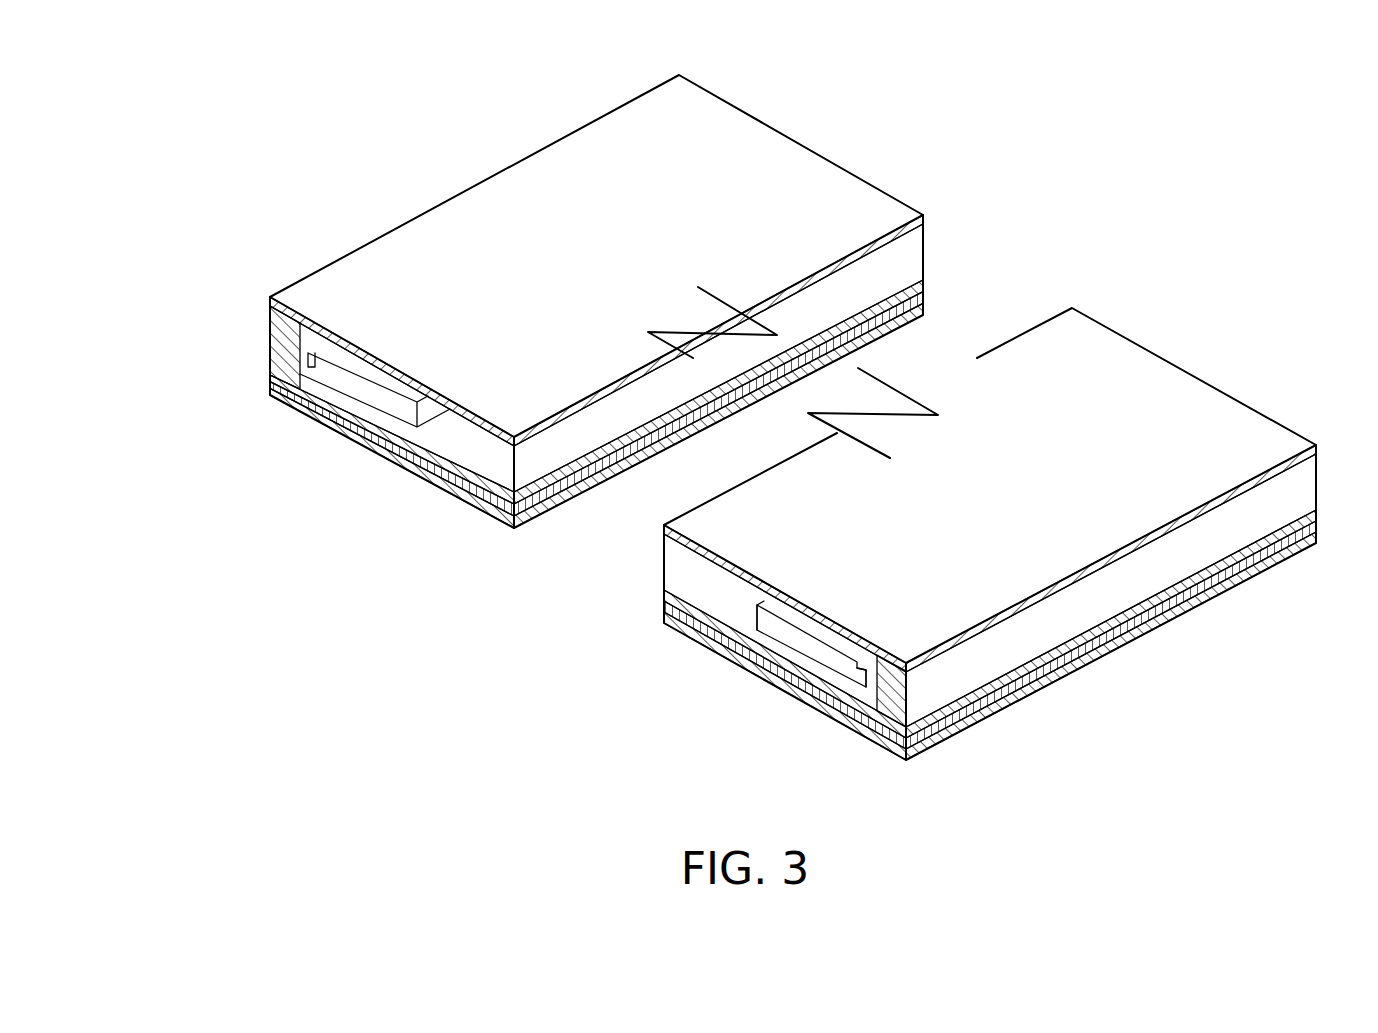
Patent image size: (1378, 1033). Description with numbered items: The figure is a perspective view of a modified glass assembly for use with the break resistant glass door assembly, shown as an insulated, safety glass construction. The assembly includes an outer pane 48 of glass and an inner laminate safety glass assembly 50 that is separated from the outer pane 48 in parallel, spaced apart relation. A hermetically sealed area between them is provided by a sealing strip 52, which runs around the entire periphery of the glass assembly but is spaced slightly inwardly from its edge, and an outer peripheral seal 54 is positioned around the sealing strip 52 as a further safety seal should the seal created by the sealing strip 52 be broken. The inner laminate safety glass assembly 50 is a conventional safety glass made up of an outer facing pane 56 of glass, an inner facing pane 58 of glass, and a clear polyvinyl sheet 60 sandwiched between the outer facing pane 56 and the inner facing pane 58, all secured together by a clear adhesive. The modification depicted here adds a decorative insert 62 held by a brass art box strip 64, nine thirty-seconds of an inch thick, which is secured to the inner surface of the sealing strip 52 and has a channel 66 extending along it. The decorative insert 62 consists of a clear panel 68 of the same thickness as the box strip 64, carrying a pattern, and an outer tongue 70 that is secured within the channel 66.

The outer pane 48 is at (615, 132).
The inner laminate safety glass assembly 50 is at (441, 154).
The sealing strip 52 is at (297, 322).
The outer peripheral seal 54 is at (268, 341).
The outer facing pane 56 is at (493, 467).
The inner facing pane 58 is at (347, 437).
The clear polyvinyl sheet 60 is at (398, 460).
The decorative insert 62 is at (757, 615).
The brass art box strip 64 is at (870, 720).
The channel 66 is at (858, 645).
The clear panel 68 is at (789, 633).
The outer tongue 70 is at (861, 677).